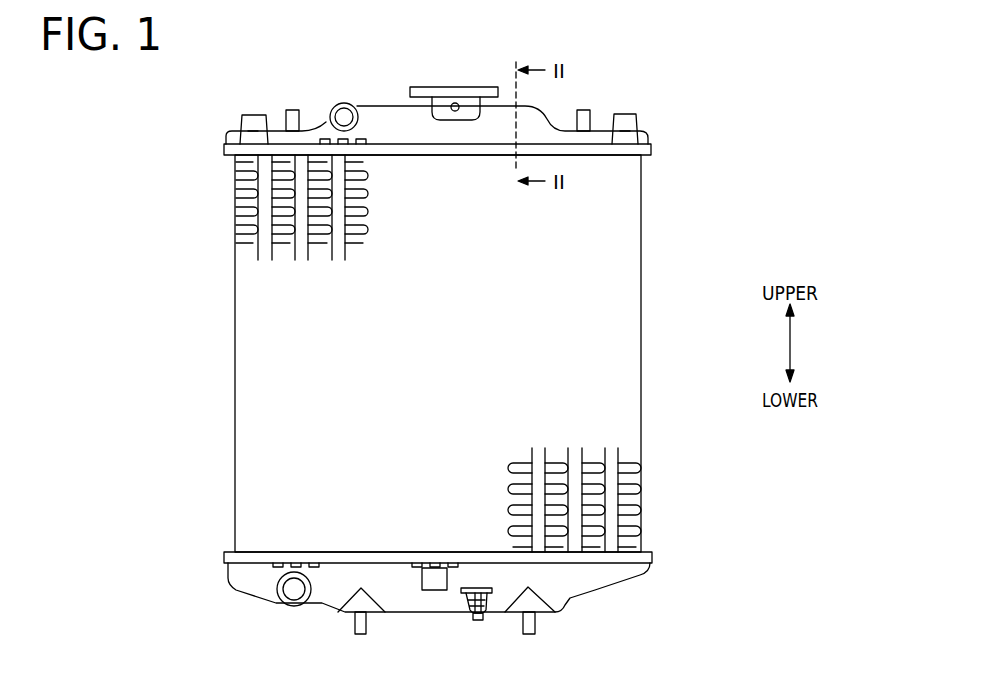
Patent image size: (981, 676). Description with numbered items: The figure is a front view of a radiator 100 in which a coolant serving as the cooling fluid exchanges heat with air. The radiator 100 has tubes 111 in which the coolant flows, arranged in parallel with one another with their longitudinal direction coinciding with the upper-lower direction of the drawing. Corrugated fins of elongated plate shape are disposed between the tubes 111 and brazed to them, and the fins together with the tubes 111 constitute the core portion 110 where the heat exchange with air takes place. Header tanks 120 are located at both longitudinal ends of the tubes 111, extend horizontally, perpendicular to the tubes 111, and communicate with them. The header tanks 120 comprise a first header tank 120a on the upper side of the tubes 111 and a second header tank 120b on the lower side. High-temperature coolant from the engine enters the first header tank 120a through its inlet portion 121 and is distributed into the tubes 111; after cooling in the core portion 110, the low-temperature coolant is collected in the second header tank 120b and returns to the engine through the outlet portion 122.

The radiator 100 is at (490, 352).
The core portion 110 is at (618, 364).
The tubes 111 is at (545, 452).
The header tanks 120 is at (442, 352).
The first header tank 120a is at (543, 130).
The second header tank 120b is at (432, 598).
The inlet portion 121 is at (334, 111).
The outlet portion 122 is at (292, 602).